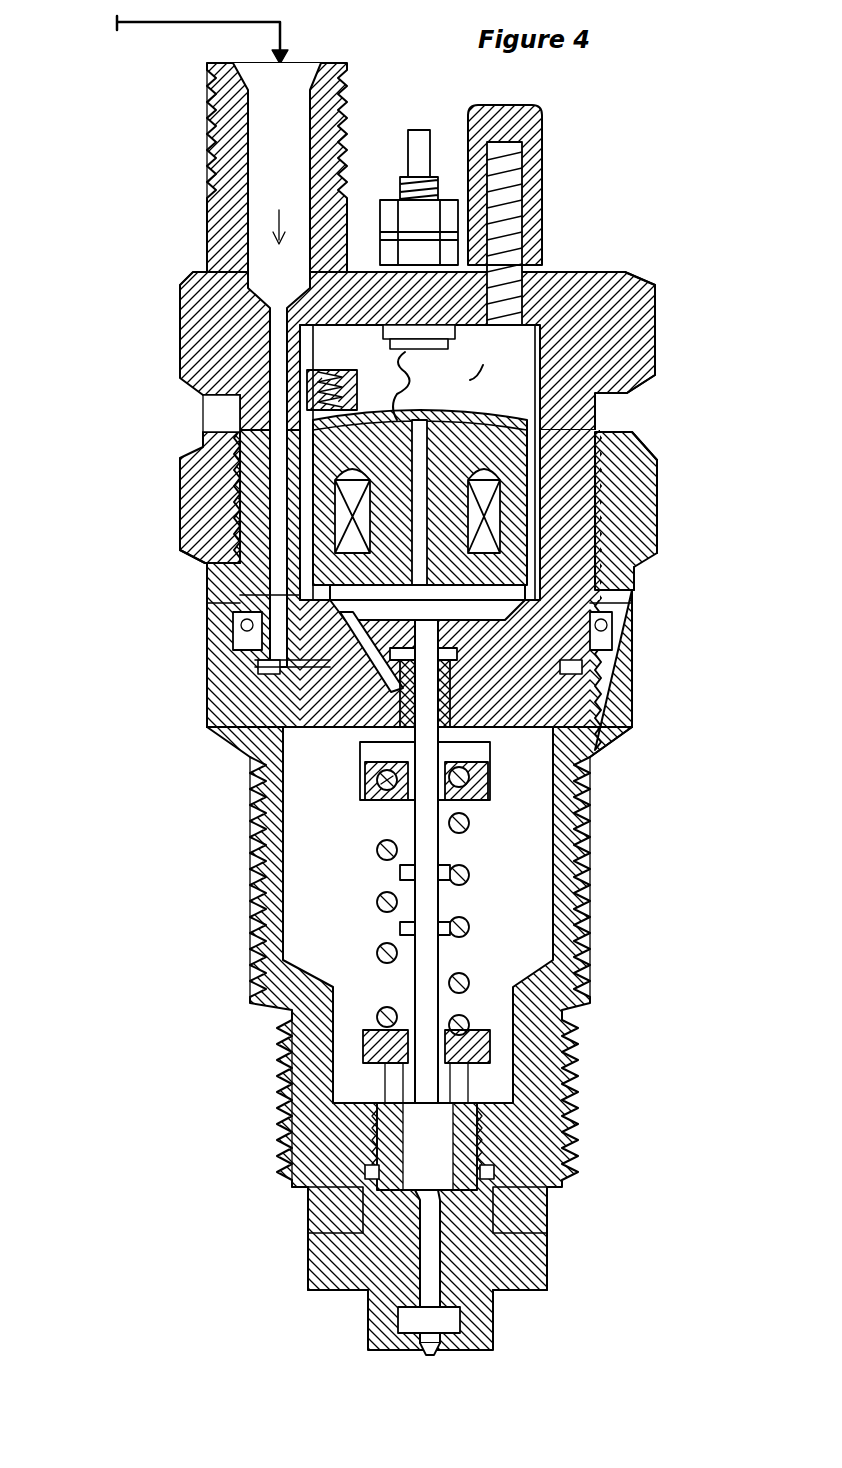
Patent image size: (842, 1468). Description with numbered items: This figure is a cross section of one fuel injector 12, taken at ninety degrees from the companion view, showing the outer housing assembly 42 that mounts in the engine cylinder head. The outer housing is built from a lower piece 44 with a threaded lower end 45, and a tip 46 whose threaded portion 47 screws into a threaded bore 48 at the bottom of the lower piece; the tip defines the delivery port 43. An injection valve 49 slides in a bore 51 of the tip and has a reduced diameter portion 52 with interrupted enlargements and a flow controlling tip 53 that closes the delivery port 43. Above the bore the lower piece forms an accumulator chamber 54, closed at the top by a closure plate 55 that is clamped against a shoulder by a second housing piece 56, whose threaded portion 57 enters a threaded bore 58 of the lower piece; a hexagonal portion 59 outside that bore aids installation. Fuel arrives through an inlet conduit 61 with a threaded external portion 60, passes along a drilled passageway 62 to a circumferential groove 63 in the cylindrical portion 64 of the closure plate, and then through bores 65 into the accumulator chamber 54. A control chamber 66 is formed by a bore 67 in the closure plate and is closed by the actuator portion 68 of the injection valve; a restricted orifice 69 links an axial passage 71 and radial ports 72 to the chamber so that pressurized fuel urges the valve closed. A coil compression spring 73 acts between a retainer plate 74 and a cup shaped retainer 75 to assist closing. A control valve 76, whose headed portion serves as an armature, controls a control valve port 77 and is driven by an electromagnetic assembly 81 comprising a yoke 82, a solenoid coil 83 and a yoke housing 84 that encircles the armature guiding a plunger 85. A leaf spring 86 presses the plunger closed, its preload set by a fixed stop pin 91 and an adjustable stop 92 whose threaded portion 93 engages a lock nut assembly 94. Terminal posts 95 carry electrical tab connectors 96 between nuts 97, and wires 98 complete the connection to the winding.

The fuel injector 12 is at (670, 335).
The outer housing assembly 42 is at (668, 498).
The delivery port 43 is at (423, 1353).
The lower housing piece 44 is at (207, 735).
The threaded lower end 45 is at (285, 1138).
The tip 46 is at (367, 1343).
The threaded portion 47 is at (362, 1160).
The threaded bore 48 is at (290, 1108).
The injection valve 49 is at (445, 1002).
The bore 51 is at (450, 1268).
The reduced diameter portion 52 is at (450, 1257).
The flow controlling tip 53 is at (437, 1357).
The accumulator chamber 54 is at (521, 905).
The closure plate 55 is at (620, 746).
The second housing piece 56 is at (658, 380).
The threaded portion 57 is at (662, 525).
The threaded bore 58 is at (659, 508).
The hexagonal portion 59 is at (640, 432).
The threaded external portion 60 is at (215, 122).
The inlet conduit 61 is at (246, 152).
The drilled passageway 62 is at (232, 300).
The circumferential groove 63 is at (292, 675).
The cylindrical portion 64 is at (632, 700).
The bores 65 is at (258, 782).
The control chamber 66 is at (592, 655).
The bore 67 is at (512, 744).
The actuator portion 68 is at (441, 689).
The restricted orifice 69 is at (325, 746).
The axial passage 71 is at (373, 812).
The radial ports 72 is at (487, 778).
The coil compression spring 73 is at (377, 901).
The retainer plate 74 is at (365, 782).
The cup shaped retainer 75 is at (492, 1047).
The control valve 76 is at (580, 592).
The control valve port 77 is at (372, 660).
The electromagnetic assembly 81 is at (296, 540).
The yoke 82 is at (212, 566).
The solenoid coil 83 is at (203, 444).
The yoke housing 84 is at (300, 440).
The plunger 85 is at (470, 380).
The leaf spring 86 is at (432, 408).
The fixed stop pin 91 is at (312, 382).
The adjustable stop 92 is at (643, 273).
The threaded portion 93 is at (490, 400).
The lock nut assembly 94 is at (540, 240).
The terminal posts 95 is at (405, 172).
The electrical tab connectors 96 is at (347, 233).
The nuts 97 is at (384, 224).
The wires 98 is at (398, 398).